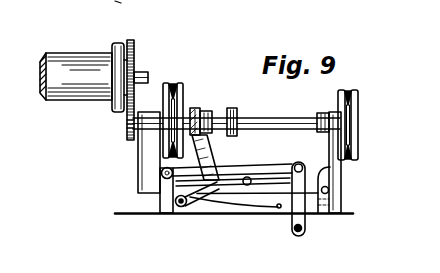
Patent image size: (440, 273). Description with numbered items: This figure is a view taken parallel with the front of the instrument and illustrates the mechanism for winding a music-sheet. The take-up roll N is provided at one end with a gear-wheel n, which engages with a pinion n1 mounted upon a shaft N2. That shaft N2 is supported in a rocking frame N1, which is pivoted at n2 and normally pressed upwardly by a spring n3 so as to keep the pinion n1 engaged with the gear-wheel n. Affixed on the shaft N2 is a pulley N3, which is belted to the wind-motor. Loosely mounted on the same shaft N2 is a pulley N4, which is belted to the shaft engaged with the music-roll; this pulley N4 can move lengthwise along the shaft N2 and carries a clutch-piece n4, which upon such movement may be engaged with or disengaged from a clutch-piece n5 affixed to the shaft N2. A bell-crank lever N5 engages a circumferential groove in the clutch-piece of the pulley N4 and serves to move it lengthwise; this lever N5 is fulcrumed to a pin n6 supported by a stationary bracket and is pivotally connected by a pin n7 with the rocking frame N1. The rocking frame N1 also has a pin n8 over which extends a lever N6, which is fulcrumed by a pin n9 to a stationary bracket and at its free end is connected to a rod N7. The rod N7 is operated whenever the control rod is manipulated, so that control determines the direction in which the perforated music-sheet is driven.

The take-up roll N is at (87, 55).
The gear-wheel n is at (134, 46).
The pinion n1 is at (126, 127).
The rocking frame N1 is at (138, 183).
The shaft N2 is at (282, 118).
The pulley N3 is at (360, 98).
The pulley N4 is at (172, 86).
The clutch-piece n4 is at (204, 108).
The clutch-piece n5 is at (231, 108).
The bell-crank lever N5 is at (203, 214).
The lever N6 is at (312, 169).
The rod N7 is at (306, 226).
The pivot n2 is at (341, 186).
The spring n3 is at (232, 205).
The pin n6 is at (178, 213).
The pin n7 is at (216, 190).
The pin n8 is at (249, 177).
The pin n9 is at (161, 172).